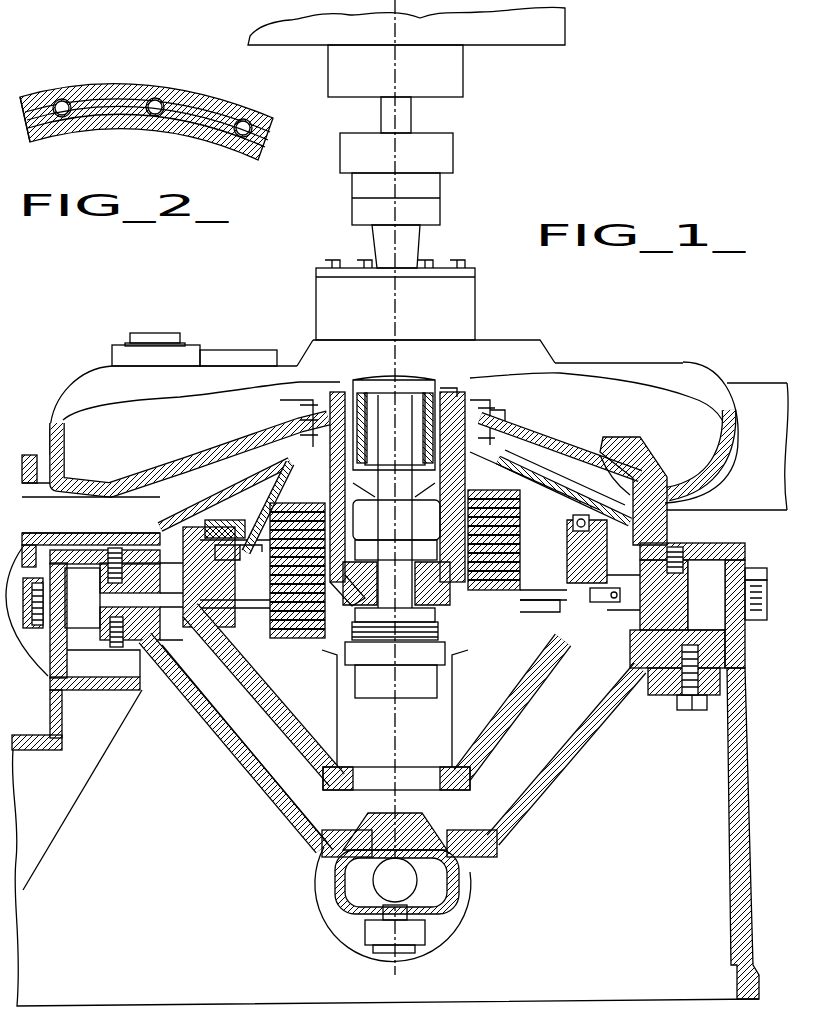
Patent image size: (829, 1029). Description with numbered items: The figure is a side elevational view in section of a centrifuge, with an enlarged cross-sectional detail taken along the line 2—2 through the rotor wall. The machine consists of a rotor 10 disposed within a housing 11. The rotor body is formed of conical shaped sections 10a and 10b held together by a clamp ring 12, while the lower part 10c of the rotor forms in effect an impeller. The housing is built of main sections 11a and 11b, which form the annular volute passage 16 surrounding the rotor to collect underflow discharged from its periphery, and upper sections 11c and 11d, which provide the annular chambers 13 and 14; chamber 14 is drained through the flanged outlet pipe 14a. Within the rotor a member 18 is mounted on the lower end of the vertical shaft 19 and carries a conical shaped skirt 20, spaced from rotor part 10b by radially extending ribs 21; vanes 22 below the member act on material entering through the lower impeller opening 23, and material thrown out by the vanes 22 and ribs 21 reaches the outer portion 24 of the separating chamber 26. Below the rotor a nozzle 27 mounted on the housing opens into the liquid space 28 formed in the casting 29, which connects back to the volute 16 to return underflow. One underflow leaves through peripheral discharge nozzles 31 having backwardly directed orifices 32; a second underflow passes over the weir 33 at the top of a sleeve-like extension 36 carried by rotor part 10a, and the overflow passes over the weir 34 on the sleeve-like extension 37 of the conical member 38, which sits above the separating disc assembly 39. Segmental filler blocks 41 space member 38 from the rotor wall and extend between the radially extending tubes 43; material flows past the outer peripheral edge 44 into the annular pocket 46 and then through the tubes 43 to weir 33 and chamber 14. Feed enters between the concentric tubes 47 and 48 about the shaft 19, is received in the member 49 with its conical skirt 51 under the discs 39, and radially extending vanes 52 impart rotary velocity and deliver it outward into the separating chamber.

In FIG. 1, the section line 2— 2 is at (258, 512).
In FIG. 1, the rotor 10 is at (242, 540).
In FIG. 2, the conical shaped rotor section 10a is at (78, 95).
In FIG. 1, the conical shaped rotor section 10a is at (275, 488).
In FIG. 1, the conical shaped rotor section 10b is at (192, 694).
In FIG. 1, the lower part of the rotor 10c is at (303, 758).
In FIG. 1, the housing 11 is at (195, 722).
In FIG. 1, the main housing section 11a is at (735, 562).
In FIG. 1, the main housing section 11b is at (212, 740).
In FIG. 1, the upper housing section 11c is at (75, 376).
In FIG. 1, the upper housing section 11d is at (615, 497).
In FIG. 1, the clamp ring 12 is at (208, 522).
In FIG. 1, the annular chamber 13 is at (722, 462).
In FIG. 1, the annular chamber 14 is at (628, 503).
In FIG. 1, the flanged outlet pipe 14a is at (44, 497).
In FIG. 1, the annular volute passage 16 is at (84, 640).
In FIG. 1, the member 18 is at (464, 652).
In FIG. 1, the vertical shaft 19 is at (400, 400).
In FIG. 1, the conical shaped skirt 20 is at (560, 652).
In FIG. 1, the radially extending ribs 21 is at (553, 672).
In FIG. 1, the radial extending vanes 22 is at (330, 735).
In FIG. 1, the lower impeller opening 23 is at (360, 790).
In FIG. 1, the outer portion of the separating chamber 24 is at (205, 625).
In FIG. 1, the separating chamber 26 is at (525, 614).
In FIG. 1, the nozzle 27 is at (428, 825).
In FIG. 1, the liquid space 28 is at (455, 890).
In FIG. 1, the casting 29 is at (343, 888).
In FIG. 1, the peripheral discharge nozzles 31 is at (575, 573).
In FIG. 1, the backwardly directed discharge orifices 32 is at (614, 599).
In FIG. 1, the weir 33 is at (505, 437).
In FIG. 1, the weir 34 is at (488, 405).
In FIG. 1, the sleeve-like extension 36 is at (525, 476).
In FIG. 1, the sleeve-like extension 37 is at (492, 420).
In FIG. 2, the conical member 38 is at (106, 125).
In FIG. 1, the conical member 38 is at (548, 485).
In FIG. 1, the separating disc assembly 39 is at (505, 632).
In FIG. 2, the segmental filler blocks 41 is at (140, 97).
In FIG. 2, the radially extending tubes 43 is at (166, 99).
In FIG. 1, the radially extending tubes 43 is at (582, 502).
In FIG. 1, the outer peripheral edge 44 is at (252, 548).
In FIG. 1, the annular pocket 46 is at (238, 552).
In FIG. 1, the tube 47 is at (378, 392).
In FIG. 1, the tube 48 is at (357, 383).
In FIG. 1, the member 49 is at (300, 408).
In FIG. 1, the conical skirt 51 is at (293, 645).
In FIG. 1, the radially extending vanes 52 is at (350, 573).